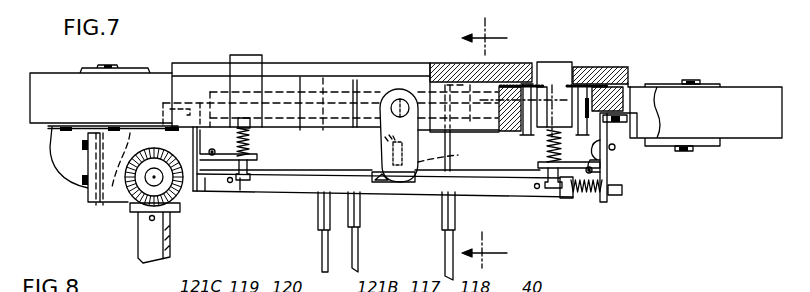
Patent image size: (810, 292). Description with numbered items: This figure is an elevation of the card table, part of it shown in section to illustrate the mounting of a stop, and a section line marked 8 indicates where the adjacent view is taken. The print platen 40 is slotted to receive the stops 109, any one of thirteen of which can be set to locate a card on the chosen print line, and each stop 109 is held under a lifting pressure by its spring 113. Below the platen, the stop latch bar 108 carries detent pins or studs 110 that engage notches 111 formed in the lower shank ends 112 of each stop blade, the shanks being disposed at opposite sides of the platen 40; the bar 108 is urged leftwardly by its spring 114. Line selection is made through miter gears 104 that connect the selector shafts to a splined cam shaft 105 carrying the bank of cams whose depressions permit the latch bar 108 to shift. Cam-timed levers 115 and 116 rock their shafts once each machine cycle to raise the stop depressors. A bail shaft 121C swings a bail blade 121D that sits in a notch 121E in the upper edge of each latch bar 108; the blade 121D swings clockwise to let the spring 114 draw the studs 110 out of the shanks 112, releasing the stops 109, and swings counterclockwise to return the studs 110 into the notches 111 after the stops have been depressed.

The section line 8- 8 is at (493, 143).
The print platen 40 is at (521, 63).
The miter gears 104 is at (133, 204).
The splined cam shaft 105 is at (160, 181).
The stop latch bar 108 is at (502, 192).
The stop 109 is at (258, 58).
The detent pin 110 is at (231, 183).
The notch 111 is at (249, 176).
The lower shank end 112 is at (252, 142).
The spring 113 is at (543, 144).
The spring 114 is at (583, 197).
The lever 115 is at (446, 246).
The lever 116 is at (320, 246).
The bail shaft 121C is at (397, 100).
The bail blade 121D is at (460, 157).
The notch 121E is at (385, 182).